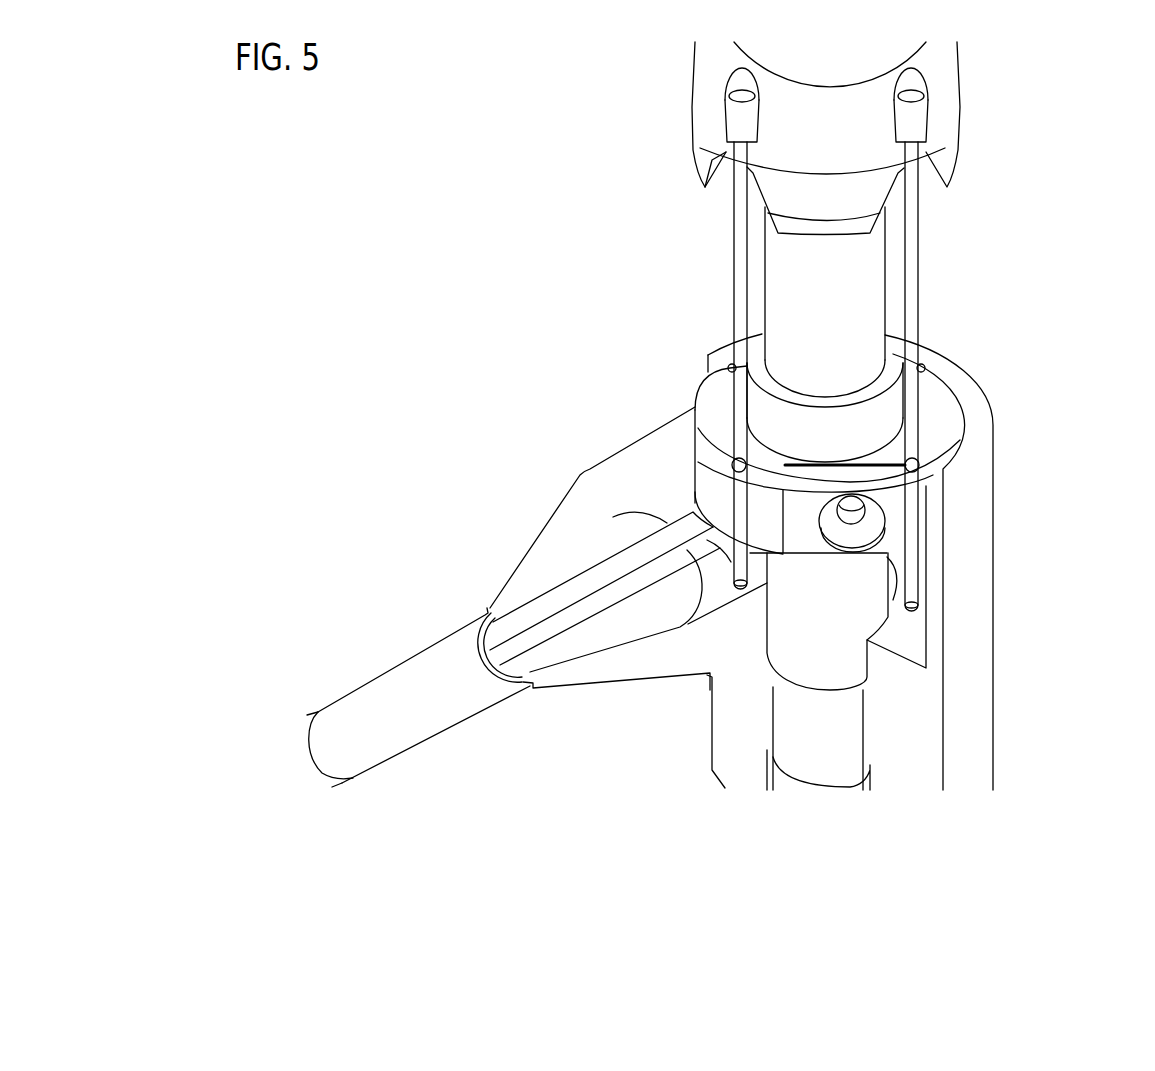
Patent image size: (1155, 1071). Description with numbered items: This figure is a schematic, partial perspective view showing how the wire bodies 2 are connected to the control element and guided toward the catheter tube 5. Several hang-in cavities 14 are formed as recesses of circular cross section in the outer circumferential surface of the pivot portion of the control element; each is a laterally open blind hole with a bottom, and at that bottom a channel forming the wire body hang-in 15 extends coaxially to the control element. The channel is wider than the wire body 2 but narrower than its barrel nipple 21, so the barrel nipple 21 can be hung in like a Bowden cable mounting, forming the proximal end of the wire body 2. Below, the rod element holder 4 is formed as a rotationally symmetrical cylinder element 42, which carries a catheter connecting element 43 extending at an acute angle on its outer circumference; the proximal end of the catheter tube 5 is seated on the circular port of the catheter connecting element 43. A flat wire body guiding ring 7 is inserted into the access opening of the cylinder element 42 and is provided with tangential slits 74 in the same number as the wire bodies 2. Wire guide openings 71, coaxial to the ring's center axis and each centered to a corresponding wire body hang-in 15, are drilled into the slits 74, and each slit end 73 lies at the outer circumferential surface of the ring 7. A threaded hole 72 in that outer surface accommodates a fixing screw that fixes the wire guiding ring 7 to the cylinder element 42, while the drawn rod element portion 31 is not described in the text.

The wire body 2 is at (910, 243).
The rod element holder 4 is at (968, 748).
The catheter tube 5 is at (352, 710).
The wire body guiding ring 7 is at (707, 403).
The hang-in cavity 14 is at (743, 80).
The wire body hang-in 15 is at (723, 153).
The barrel nipple 21 is at (912, 121).
The neck 31 is at (752, 192).
The cylinder element 42 is at (932, 642).
The catheter connecting element 43 is at (515, 587).
The wire guide opening 71 is at (732, 463).
The threaded hole 72 is at (870, 520).
The slit end 73 is at (693, 510).
The tangential slit 74 is at (875, 462).